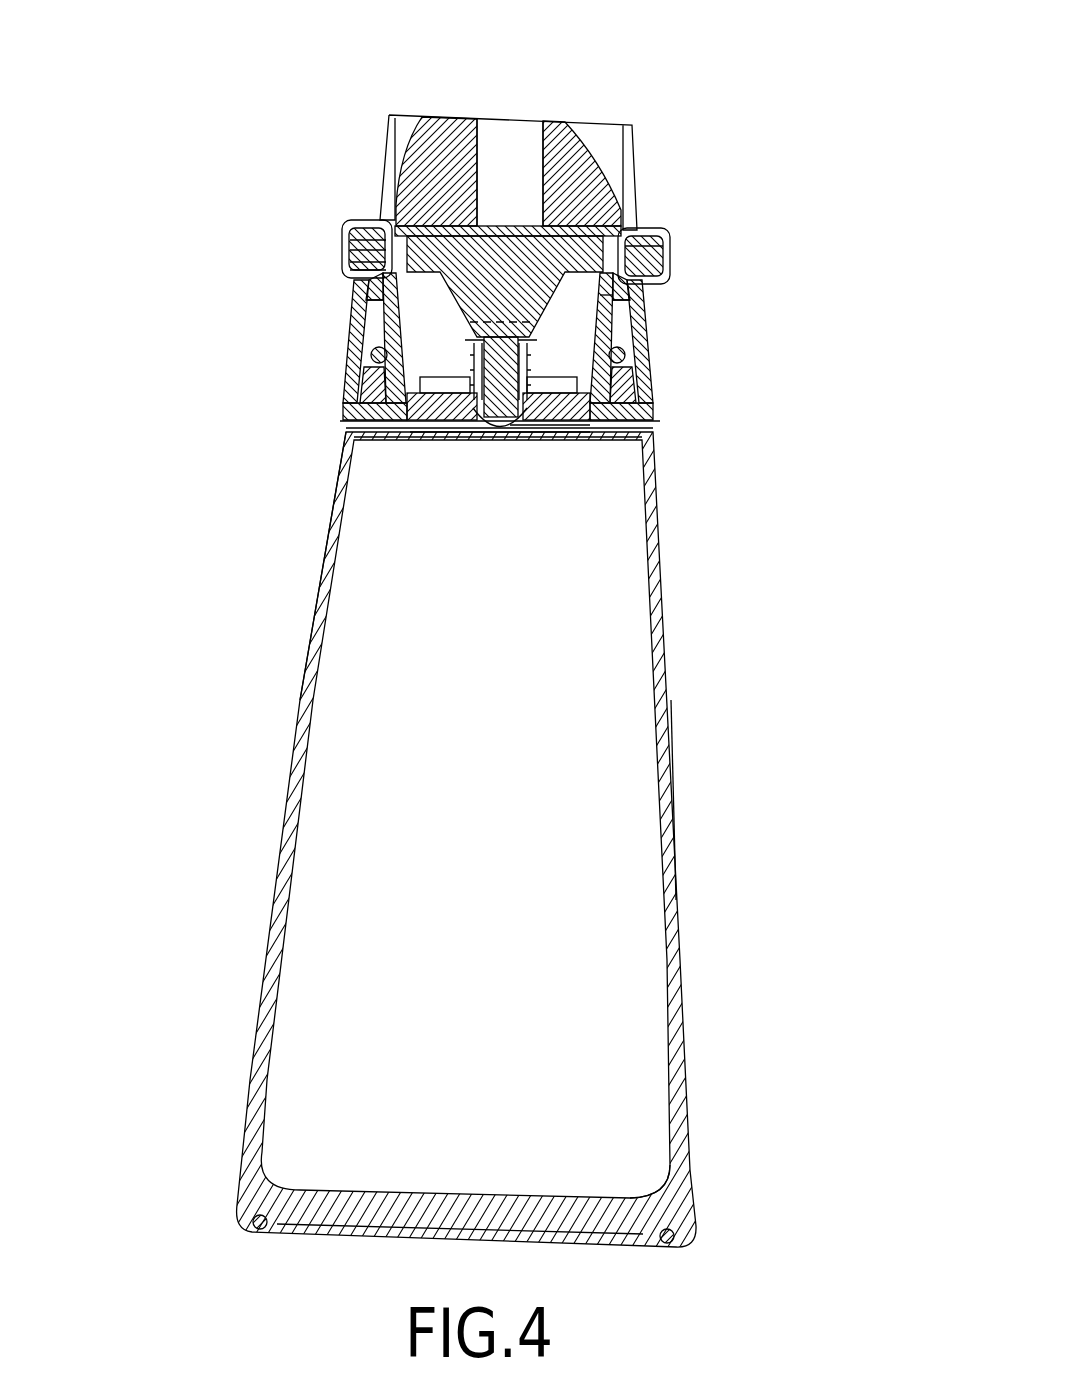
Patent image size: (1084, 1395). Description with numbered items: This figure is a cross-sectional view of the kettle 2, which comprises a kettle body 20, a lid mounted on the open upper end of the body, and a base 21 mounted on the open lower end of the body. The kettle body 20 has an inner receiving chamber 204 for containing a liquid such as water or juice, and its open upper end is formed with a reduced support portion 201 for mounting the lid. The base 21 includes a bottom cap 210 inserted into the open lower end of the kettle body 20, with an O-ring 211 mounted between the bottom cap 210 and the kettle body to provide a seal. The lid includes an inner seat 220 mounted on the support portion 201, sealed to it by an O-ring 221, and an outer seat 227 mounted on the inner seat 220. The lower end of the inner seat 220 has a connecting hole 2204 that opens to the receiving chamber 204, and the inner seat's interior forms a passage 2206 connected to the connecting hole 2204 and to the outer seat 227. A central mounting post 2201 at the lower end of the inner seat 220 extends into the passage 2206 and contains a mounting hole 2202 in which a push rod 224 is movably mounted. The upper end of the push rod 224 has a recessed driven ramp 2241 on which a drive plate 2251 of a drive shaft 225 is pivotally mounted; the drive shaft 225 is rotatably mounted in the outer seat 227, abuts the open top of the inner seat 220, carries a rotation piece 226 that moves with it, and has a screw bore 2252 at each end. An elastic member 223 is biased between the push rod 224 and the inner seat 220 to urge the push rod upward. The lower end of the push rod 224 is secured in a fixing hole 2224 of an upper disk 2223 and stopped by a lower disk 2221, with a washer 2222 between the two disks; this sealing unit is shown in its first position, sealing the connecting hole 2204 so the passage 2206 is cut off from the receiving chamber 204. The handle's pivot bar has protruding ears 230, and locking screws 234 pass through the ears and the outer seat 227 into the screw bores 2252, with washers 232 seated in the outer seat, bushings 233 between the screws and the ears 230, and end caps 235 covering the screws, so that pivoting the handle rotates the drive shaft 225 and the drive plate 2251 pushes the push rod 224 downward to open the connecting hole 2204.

The kettle 2 is at (516, 874).
The kettle body 20 is at (677, 845).
The support portion 201 is at (622, 383).
The receiving chamber 204 is at (636, 1007).
The base 21 is at (606, 1240).
The bottom cap 210 is at (660, 1199).
The O-ring 211 is at (665, 1246).
The inner seat 220 is at (642, 297).
The O-ring 221 is at (600, 332).
The mounting post 2201 is at (447, 412).
The mounting hole 2202 is at (493, 430).
The connecting hole 2204 is at (340, 497).
The passage 2206 is at (430, 285).
The lower disk 2221 is at (510, 433).
The washer 2222 is at (587, 407).
The upper disk 2223 is at (530, 437).
The fixing hole 2224 is at (468, 412).
The elastic member 223 is at (473, 348).
The push rod 224 is at (343, 420).
The driven ramp 2241 is at (473, 326).
The drive shaft 225 is at (634, 193).
The drive plate 2251 is at (553, 308).
The screw bore 2252 is at (650, 235).
The rotation piece 226 is at (497, 240).
The outer seat 227 is at (557, 140).
The protruding ear 230 is at (370, 228).
The washer 232 is at (362, 272).
The bushing 233 is at (368, 247).
The locking screw 234 is at (358, 255).
The end cap 235 is at (352, 262).